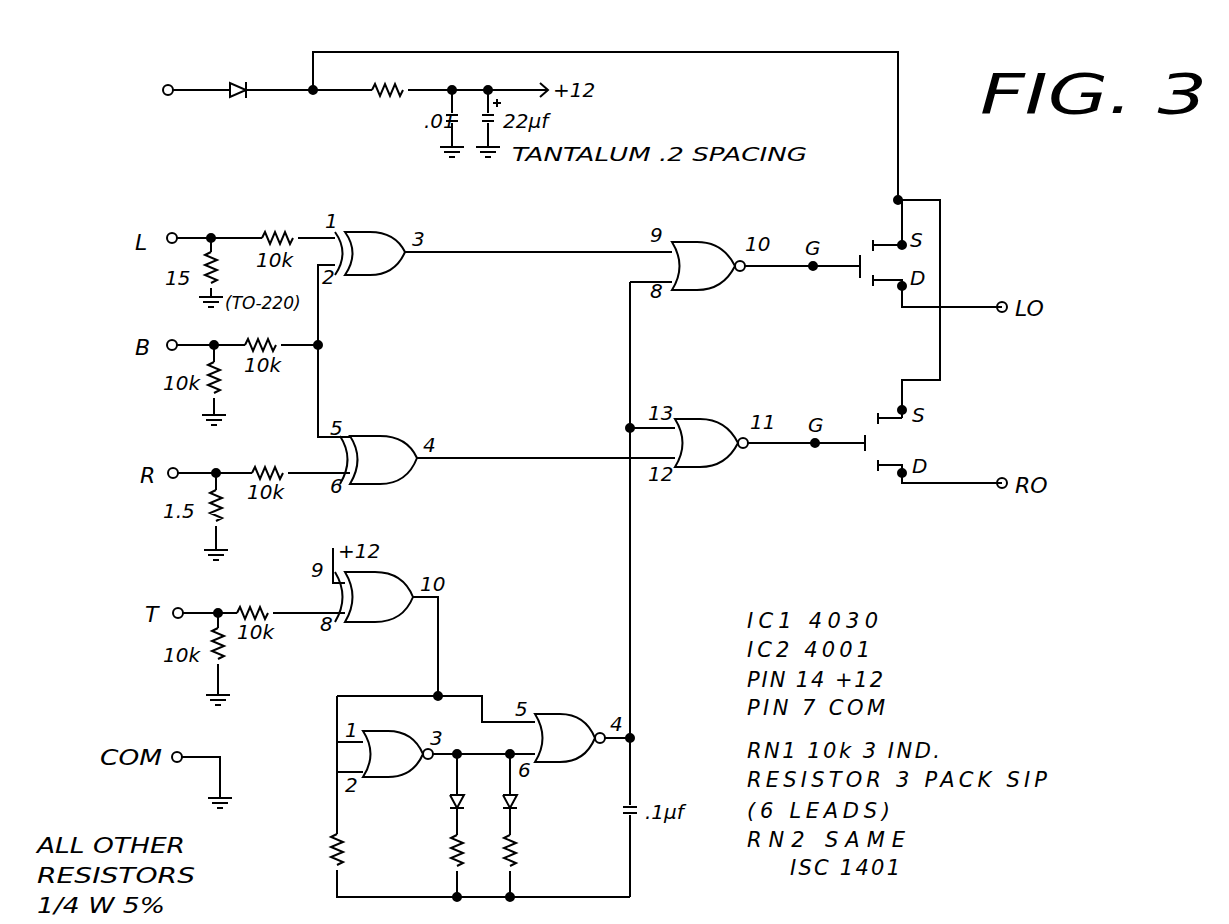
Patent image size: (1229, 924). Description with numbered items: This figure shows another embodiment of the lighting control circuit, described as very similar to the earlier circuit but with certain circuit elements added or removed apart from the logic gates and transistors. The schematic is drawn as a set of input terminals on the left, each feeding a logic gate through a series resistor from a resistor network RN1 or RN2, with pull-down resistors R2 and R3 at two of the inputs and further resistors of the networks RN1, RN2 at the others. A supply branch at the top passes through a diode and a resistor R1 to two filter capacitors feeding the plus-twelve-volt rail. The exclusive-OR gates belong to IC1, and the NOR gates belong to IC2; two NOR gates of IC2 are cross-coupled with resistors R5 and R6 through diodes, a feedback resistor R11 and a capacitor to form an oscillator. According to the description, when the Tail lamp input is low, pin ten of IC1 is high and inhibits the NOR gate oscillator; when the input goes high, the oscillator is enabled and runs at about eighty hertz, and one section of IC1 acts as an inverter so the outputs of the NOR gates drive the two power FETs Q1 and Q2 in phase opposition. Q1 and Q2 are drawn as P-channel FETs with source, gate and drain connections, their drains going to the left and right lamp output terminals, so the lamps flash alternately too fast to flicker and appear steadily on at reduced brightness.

The resistor R1 is at (386, 76).
The resistor R2 (TO-220, 15 ohm) R2 is at (228, 271).
The resistor R3 (TO-220, 1.5 ohm) R3 is at (273, 506).
The resistor R5 is at (436, 852).
The resistor R6 is at (525, 852).
The resistor R11 100k R11 is at (304, 852).
The resistor network RN1 10k RN1 is at (253, 303).
The resistor network RN2 10k RN2 is at (248, 555).
The P-FET 9530 Q1 is at (873, 292).
The P-FET 9530 Q2 is at (875, 386).
The element IC1 is at (376, 427).
The IC2 4001 NOR gates 2A,2B,2C,2D IC2 is at (555, 509).